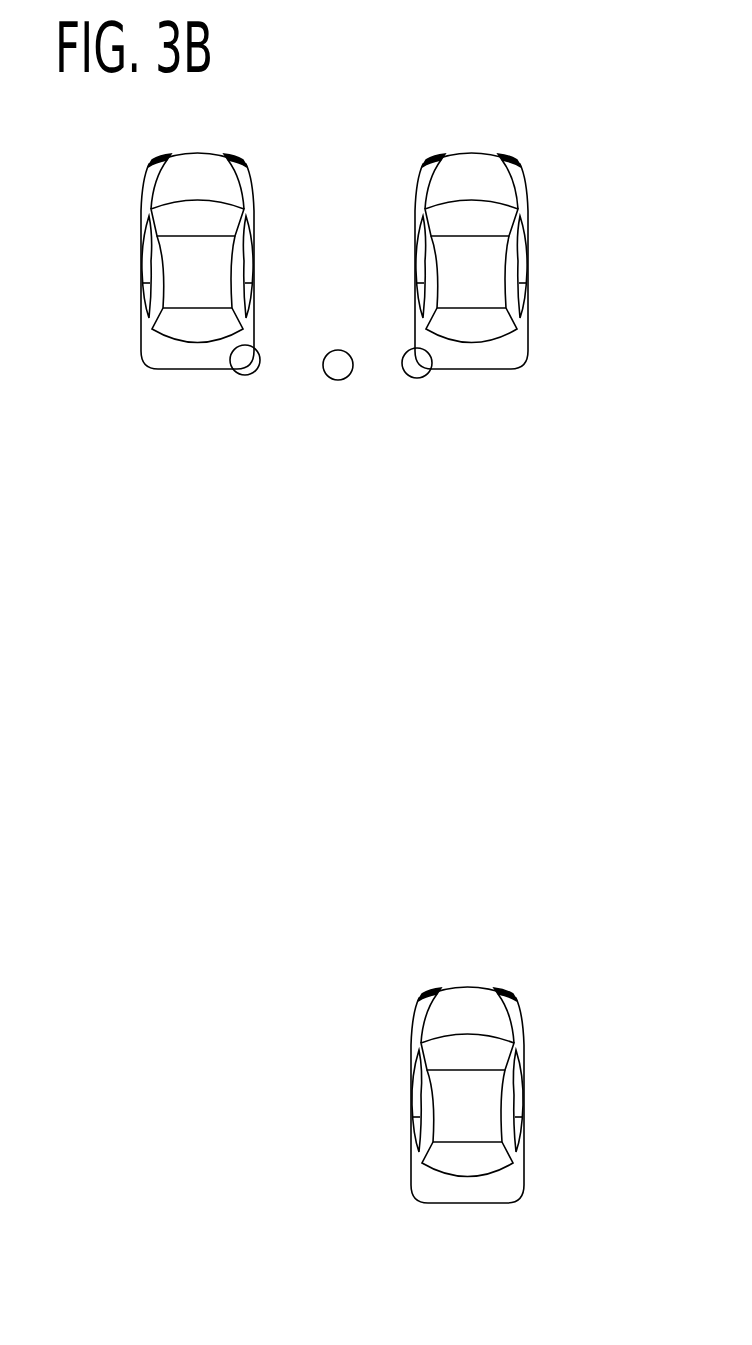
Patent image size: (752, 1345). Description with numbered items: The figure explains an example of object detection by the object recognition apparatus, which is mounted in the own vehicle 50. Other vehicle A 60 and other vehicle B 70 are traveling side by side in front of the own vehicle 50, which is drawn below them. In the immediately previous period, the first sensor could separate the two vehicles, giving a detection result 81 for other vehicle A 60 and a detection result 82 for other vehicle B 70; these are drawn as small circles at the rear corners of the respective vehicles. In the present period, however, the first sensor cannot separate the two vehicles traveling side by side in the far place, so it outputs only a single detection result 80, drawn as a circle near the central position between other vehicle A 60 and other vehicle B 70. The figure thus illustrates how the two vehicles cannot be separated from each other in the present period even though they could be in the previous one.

The own vehicle 50 is at (524, 1031).
The other vehicle A 60 is at (255, 207).
The other vehicle B 70 is at (528, 207).
The detection result 80 is at (341, 380).
The detection result 81 is at (236, 376).
The detection result 82 is at (422, 378).